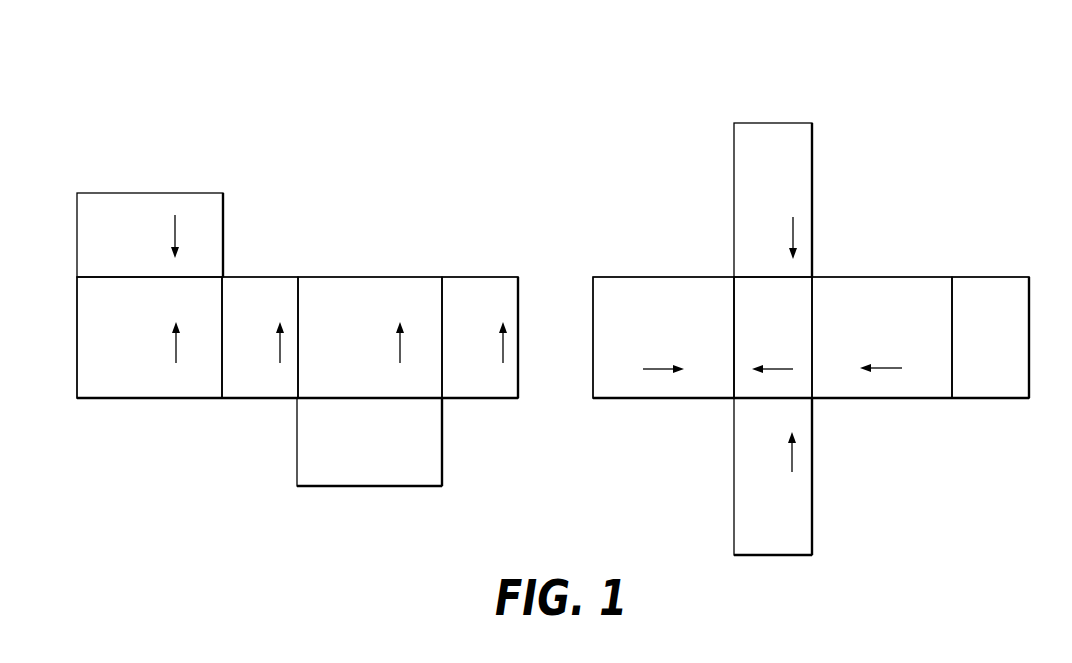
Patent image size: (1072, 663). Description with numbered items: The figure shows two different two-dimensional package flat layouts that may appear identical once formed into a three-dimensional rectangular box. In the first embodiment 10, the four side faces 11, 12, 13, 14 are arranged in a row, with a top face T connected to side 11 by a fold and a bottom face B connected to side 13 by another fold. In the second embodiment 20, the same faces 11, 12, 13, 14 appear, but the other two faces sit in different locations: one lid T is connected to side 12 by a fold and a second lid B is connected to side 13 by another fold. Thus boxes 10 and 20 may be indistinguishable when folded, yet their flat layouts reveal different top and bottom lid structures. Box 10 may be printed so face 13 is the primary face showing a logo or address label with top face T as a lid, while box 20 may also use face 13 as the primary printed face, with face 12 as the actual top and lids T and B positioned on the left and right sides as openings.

The first embodiment 10 is at (112, 121).
The second embodiment 20 is at (705, 69).
The side 11 is at (405, 337).
The side 12 is at (517, 337).
The side 13 is at (625, 337).
The face 14 is at (735, 337).